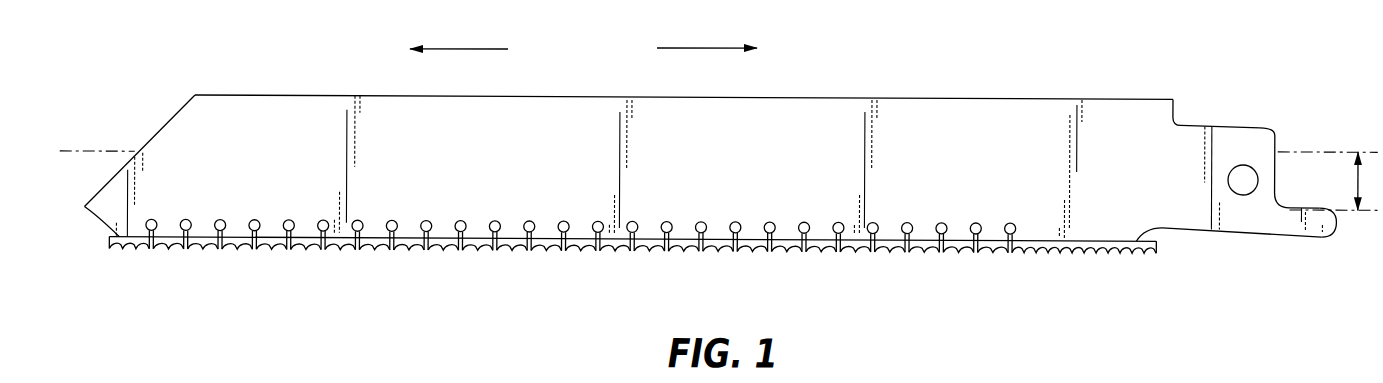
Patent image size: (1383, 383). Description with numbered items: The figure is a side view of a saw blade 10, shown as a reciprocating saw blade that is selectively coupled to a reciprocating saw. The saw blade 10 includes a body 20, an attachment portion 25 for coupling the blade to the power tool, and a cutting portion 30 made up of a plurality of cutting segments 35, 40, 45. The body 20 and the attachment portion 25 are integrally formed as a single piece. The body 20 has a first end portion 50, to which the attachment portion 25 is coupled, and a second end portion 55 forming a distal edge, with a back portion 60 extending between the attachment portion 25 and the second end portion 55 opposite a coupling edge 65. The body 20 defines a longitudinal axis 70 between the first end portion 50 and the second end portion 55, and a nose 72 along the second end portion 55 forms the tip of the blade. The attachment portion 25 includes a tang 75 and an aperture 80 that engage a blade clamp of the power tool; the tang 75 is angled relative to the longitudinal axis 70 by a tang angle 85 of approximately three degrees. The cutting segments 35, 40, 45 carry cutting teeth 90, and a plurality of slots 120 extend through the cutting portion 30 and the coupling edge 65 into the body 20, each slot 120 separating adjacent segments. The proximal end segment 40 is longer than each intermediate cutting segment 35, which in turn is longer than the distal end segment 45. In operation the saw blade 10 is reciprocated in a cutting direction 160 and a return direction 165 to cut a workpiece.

The saw blade 10 is at (1013, 51).
The body 20 is at (777, 142).
The attachment portion 25 is at (1250, 122).
The cutting portion 30 is at (871, 282).
The intermediate cutting segment 35 is at (443, 249).
The proximal end segment 40 is at (1061, 249).
The distal end segment 45 is at (126, 252).
The first end portion 50 is at (1177, 106).
The second end portion 55 is at (138, 155).
The back portion 60 is at (510, 96).
The coupling edge 65 is at (1161, 229).
The longitudinal axis 70 is at (1312, 147).
The nose 72 is at (84, 208).
The tang 75 is at (1324, 220).
The aperture 80 is at (1235, 160).
The tang angle 85 is at (1356, 177).
The cutting teeth 90 is at (237, 275).
The slots 120 is at (292, 262).
The cutting direction 160 is at (705, 46).
The return direction 165 is at (458, 47).